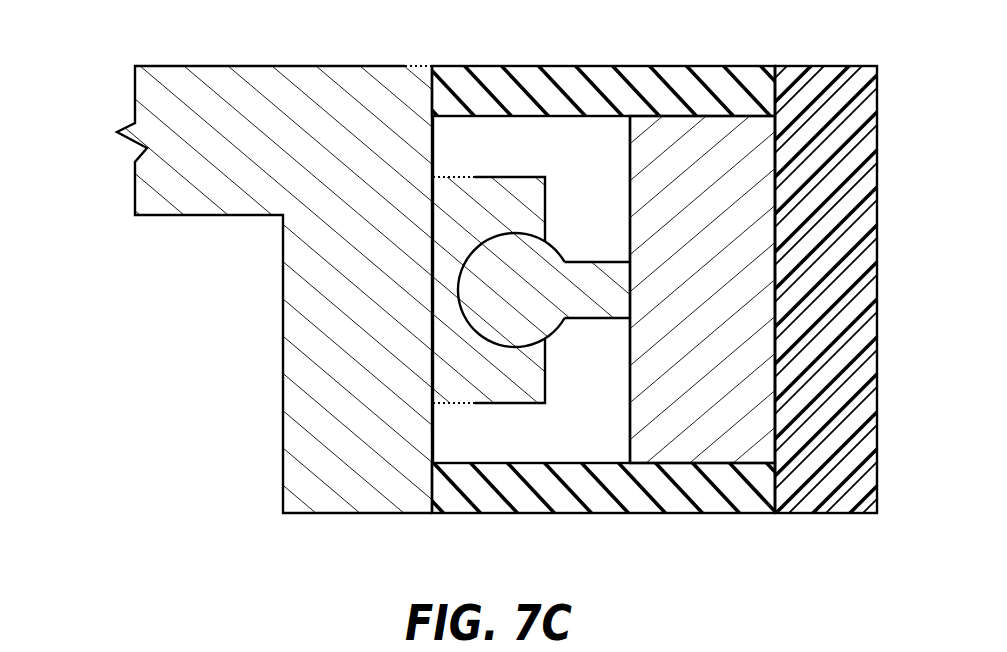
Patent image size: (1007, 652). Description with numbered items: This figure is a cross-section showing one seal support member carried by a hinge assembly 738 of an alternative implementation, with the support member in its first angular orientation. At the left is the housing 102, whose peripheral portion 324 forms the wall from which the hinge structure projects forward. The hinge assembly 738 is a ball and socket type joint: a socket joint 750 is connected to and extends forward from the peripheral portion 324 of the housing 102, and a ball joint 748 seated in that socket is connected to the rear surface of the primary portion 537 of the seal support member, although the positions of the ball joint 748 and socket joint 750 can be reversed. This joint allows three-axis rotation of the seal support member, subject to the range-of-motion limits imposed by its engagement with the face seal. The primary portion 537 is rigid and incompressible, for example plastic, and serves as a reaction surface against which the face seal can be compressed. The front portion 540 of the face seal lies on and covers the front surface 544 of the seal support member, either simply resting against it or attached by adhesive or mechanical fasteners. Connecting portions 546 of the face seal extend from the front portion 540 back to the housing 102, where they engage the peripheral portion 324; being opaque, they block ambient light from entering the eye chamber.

The housing 102 is at (90, 72).
The peripheral portion 324 is at (430, 90).
The primary portion 537 is at (663, 137).
The front portion 540 is at (877, 160).
The front surface 544 is at (775, 218).
The connecting portions 546 is at (737, 67).
The hinge assembly 738 is at (561, 162).
The ball joint 748 is at (478, 290).
The socket joint 750 is at (535, 375).